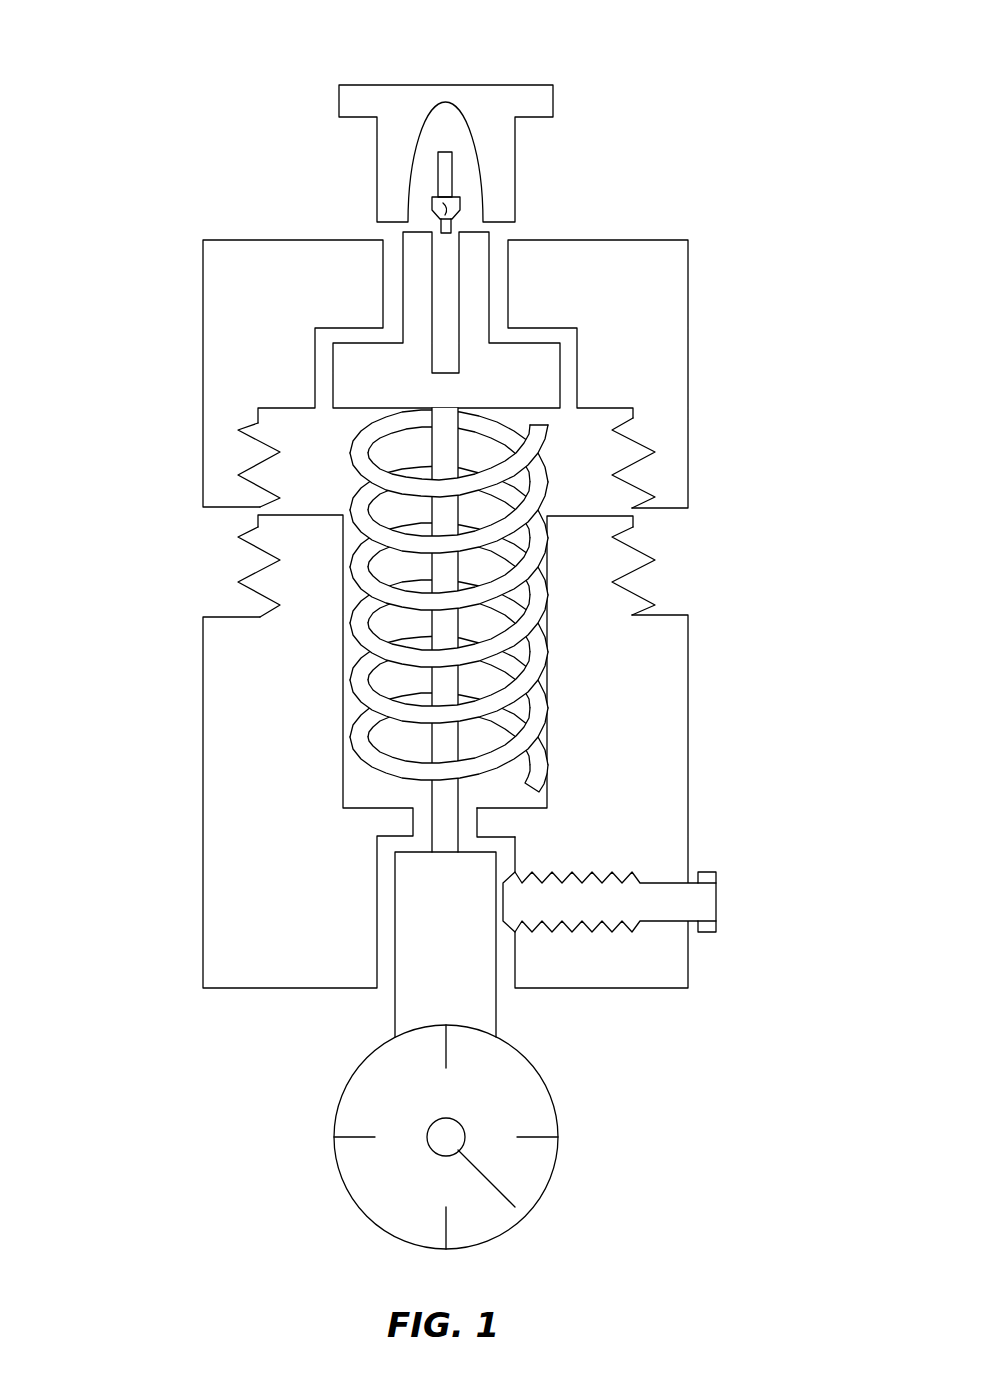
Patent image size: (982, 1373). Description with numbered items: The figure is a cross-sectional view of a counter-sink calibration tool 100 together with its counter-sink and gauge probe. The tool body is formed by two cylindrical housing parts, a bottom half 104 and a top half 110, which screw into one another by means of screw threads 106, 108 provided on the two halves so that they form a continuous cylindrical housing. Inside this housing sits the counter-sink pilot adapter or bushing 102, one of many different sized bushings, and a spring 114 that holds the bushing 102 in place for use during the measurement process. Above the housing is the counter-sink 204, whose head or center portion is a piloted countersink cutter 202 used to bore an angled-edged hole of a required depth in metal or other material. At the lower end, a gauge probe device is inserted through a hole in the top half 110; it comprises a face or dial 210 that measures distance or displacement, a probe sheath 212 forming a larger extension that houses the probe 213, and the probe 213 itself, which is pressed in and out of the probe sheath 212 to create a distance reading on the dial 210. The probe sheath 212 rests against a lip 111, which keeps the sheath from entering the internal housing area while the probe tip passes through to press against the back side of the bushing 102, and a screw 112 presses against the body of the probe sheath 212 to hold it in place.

The tool 100 is at (126, 74).
The bushing 102 is at (470, 270).
The bottom half of the housing 104 is at (218, 348).
The screw threads 106 is at (253, 448).
The screw threads 108 is at (257, 553).
The top half of the housing 110 is at (267, 738).
The lip 111 is at (493, 822).
The screw 112 is at (718, 898).
The spring 114 is at (449, 587).
The piloted countersink cutter 202 is at (443, 177).
The counter-sink 204 is at (352, 108).
The gauge head/face dial 210 is at (535, 1102).
The probe sheath 212 is at (445, 899).
The probe 213 is at (445, 817).